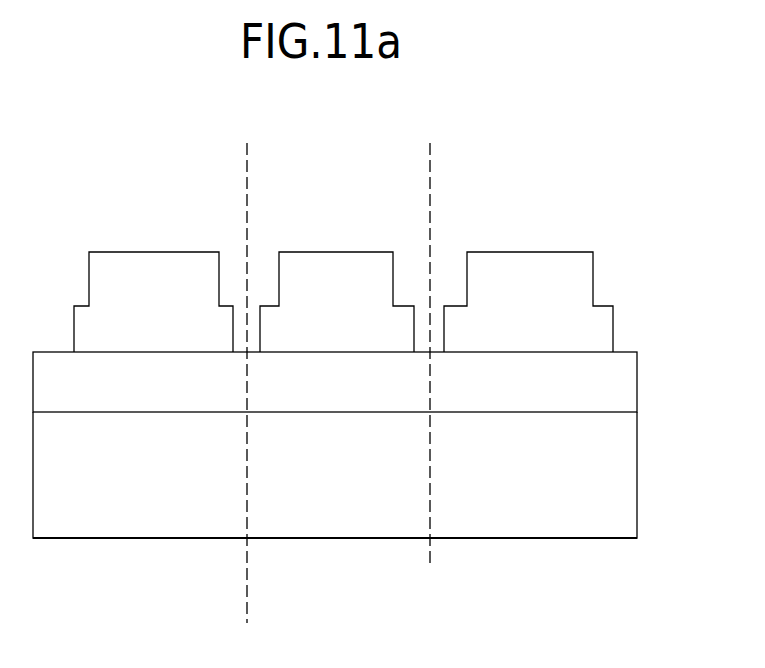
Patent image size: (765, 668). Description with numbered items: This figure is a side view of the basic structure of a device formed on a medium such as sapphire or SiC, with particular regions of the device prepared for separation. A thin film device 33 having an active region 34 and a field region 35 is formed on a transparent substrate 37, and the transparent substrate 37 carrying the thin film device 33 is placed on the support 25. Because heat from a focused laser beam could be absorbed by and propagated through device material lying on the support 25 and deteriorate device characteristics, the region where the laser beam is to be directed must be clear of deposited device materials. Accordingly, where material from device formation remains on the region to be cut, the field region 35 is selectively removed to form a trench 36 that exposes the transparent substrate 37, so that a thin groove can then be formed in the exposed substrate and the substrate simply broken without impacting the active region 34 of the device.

The support 25 is at (618, 470).
The transparent substrate 37 is at (618, 384).
The active region 34 is at (148, 265).
The thin film device 33 is at (344, 246).
The gap between structures 36 is at (432, 310).
The field region 35 is at (599, 312).